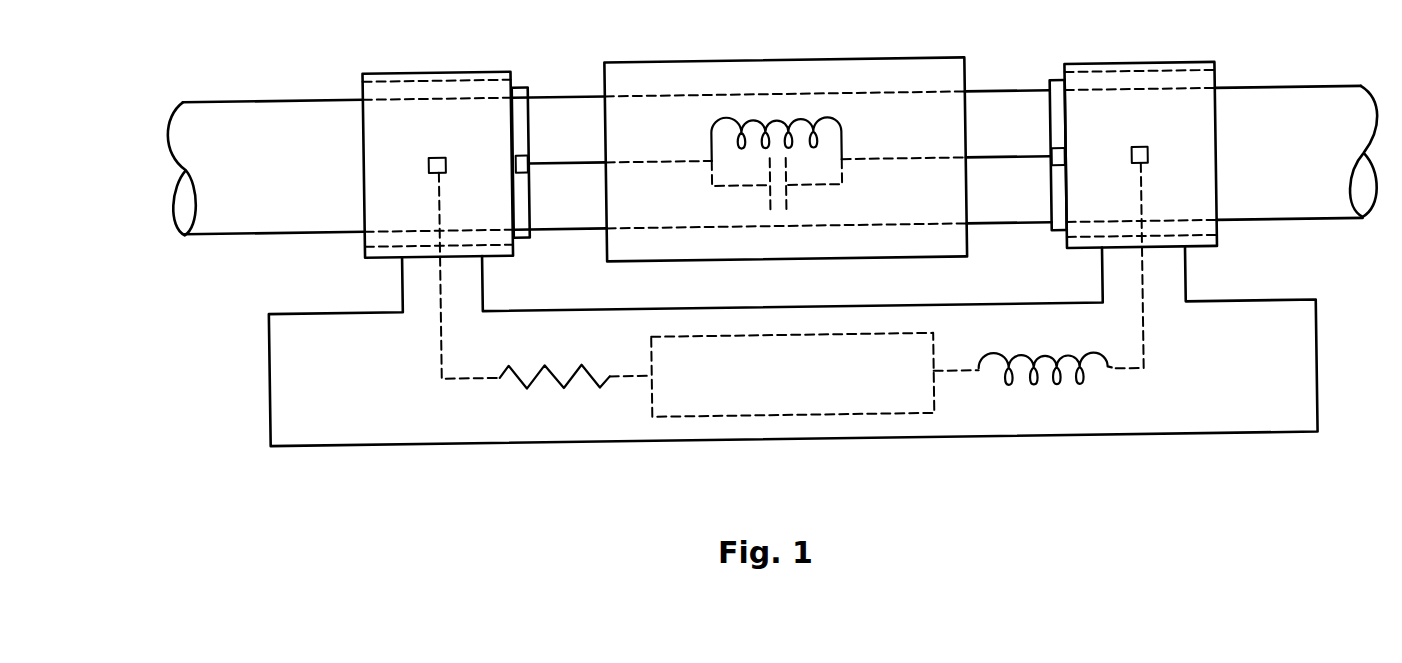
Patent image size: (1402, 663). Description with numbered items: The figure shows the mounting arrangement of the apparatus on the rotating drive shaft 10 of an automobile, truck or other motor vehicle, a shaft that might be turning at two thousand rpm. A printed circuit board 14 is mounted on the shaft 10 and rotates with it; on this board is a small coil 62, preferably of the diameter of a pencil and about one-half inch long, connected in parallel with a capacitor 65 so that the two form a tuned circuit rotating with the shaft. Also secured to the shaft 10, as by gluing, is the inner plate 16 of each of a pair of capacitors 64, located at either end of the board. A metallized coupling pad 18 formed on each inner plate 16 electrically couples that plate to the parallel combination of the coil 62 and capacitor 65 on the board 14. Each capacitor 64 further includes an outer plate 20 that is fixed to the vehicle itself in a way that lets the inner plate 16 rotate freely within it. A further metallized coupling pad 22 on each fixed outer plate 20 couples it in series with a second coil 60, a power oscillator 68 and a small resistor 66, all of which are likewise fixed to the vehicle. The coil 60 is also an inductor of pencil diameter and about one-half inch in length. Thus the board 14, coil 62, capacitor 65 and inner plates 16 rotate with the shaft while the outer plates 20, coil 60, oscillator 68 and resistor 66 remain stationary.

The rotating shaft 10 is at (1275, 94).
The printed circuit board 14 is at (968, 240).
The inner plate 16 is at (1050, 84).
The metallized coupling pad 18 is at (1052, 160).
The outer plate 20 is at (789, 129).
The metallized coupling pad 22 is at (1134, 152).
The second coil 60 is at (1045, 383).
The coil 62 is at (795, 137).
The capacitor 64 is at (1148, 68).
The capacitor 65 is at (777, 187).
The resistor 66 is at (555, 395).
The power oscillator 68 is at (812, 335).